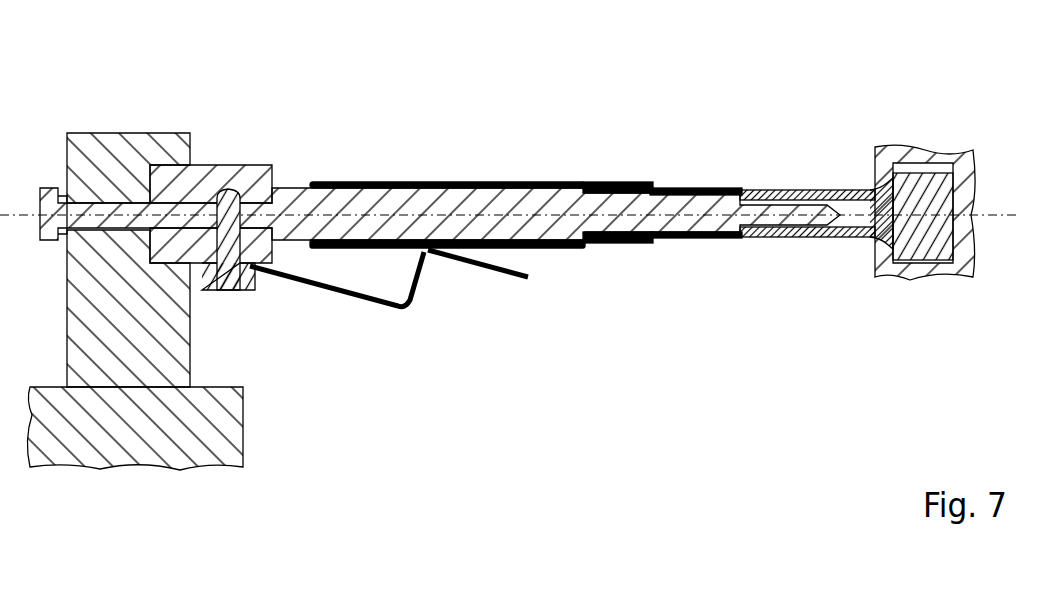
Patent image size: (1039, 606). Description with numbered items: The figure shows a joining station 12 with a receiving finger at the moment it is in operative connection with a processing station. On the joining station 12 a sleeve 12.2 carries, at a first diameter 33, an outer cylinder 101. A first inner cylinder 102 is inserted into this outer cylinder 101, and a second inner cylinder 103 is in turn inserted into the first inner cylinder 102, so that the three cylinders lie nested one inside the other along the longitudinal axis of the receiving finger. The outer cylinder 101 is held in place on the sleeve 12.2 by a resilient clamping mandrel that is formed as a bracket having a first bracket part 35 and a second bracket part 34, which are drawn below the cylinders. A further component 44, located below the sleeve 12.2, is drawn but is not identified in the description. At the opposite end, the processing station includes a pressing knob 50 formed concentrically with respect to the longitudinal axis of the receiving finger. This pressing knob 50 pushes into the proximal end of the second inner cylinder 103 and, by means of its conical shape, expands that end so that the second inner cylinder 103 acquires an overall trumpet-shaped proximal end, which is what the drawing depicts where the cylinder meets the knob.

The joining station 12 is at (135, 133).
The sleeve 12.2 is at (232, 186).
The first diameter 33 is at (450, 180).
The second bracket part 34 is at (503, 276).
The first bracket part 35 is at (373, 307).
The locking pin 44 is at (235, 293).
The pressing knob 50 is at (932, 265).
The outer cylinder 101 is at (546, 181).
The first inner cylinder 102 is at (668, 188).
The second inner cylinder 103 is at (790, 190).